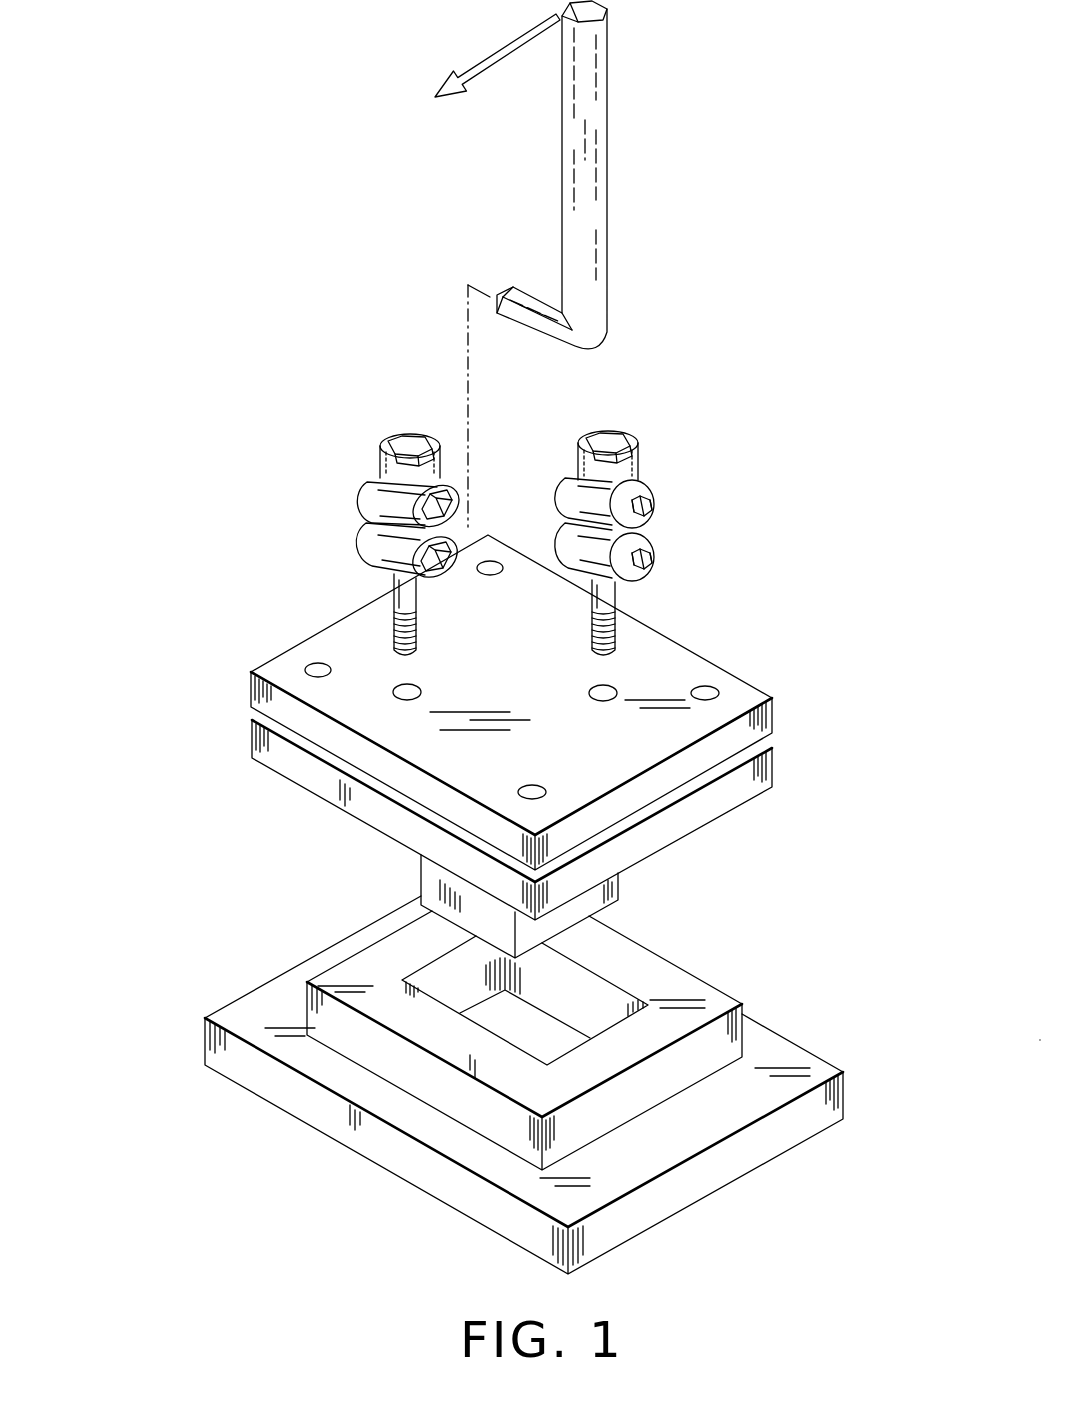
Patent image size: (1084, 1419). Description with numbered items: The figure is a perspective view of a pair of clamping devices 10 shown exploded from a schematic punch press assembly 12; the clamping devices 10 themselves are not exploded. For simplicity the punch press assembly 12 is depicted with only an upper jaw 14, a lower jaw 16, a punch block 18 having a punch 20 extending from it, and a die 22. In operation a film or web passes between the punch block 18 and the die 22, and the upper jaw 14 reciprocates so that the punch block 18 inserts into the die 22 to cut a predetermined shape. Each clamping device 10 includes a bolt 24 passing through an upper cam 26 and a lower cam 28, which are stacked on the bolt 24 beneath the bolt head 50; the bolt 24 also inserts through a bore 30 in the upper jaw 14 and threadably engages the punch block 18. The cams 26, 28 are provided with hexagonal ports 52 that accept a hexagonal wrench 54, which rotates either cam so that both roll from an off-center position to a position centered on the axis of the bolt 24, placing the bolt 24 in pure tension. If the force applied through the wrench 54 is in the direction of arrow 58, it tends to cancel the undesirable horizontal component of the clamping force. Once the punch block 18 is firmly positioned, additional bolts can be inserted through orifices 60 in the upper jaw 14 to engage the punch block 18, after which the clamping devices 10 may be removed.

The clamping device 10 is at (348, 520).
The punch press assembly 12 is at (272, 897).
The upper jaw 14 is at (762, 727).
The lower jaw 16 is at (783, 1133).
The punch block 18 is at (742, 792).
The punch 20 is at (433, 887).
The die 22 is at (678, 1000).
The bolt 24 is at (394, 615).
The upper cam 26 is at (377, 487).
The lower cam 28 is at (370, 555).
The bore 30 is at (424, 680).
The bolt head 50 is at (392, 440).
The hexagonal port 52 is at (468, 540).
The hexagonal wrench 54 is at (567, 157).
The arrow 58 is at (455, 77).
The orifices 60 is at (312, 650).